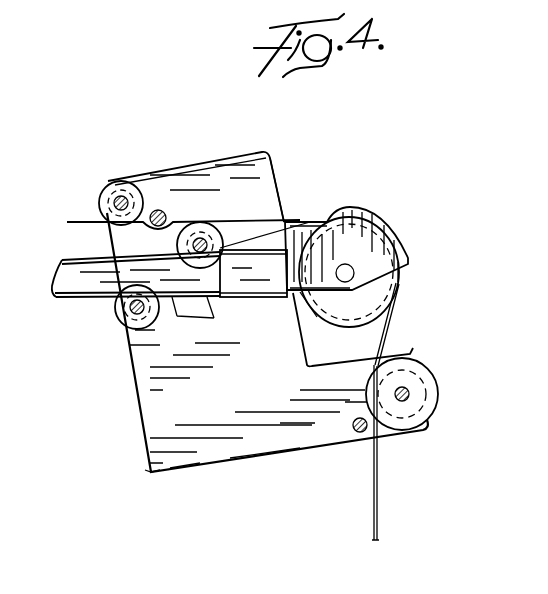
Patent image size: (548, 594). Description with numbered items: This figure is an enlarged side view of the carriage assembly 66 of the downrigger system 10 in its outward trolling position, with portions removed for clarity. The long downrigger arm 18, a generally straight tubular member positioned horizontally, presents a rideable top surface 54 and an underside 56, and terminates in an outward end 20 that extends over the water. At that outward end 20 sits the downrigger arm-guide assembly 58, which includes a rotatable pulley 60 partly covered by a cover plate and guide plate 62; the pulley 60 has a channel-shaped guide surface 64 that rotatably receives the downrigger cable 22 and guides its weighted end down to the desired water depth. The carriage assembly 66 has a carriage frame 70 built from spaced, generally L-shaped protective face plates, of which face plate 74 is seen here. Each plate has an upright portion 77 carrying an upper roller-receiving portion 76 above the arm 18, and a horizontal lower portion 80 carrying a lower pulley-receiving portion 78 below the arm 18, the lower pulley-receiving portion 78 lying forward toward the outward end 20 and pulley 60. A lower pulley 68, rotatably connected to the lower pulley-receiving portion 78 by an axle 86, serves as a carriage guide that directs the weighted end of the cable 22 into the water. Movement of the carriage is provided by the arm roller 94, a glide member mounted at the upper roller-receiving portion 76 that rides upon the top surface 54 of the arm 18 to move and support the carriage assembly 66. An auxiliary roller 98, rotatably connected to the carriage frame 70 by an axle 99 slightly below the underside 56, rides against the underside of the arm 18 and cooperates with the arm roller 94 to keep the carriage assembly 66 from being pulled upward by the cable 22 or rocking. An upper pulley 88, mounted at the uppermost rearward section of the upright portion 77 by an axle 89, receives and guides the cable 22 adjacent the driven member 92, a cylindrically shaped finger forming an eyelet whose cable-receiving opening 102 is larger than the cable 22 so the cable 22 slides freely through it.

The downrigger system 10 is at (213, 500).
The downrigger arm 18 is at (80, 285).
The outward end 20 is at (283, 313).
The downrigger cable 22 is at (379, 505).
The top surface 54 is at (84, 260).
The underside 56 is at (170, 318).
The downrigger arm-guide assembly 58 is at (361, 264).
The pulley 60 is at (402, 288).
The cover plate and guide plate 62 is at (372, 221).
The channel-shaped guide surface 64 is at (317, 302).
The carriage assembly 66 is at (236, 152).
The lower pulley 68 is at (438, 384).
The carriage frame 70 is at (147, 480).
The face plate 74 is at (140, 422).
The upper roller-receiving portion 76 is at (153, 252).
The upright portion 77 is at (285, 205).
The lower pulley-receiving portion 78 is at (393, 353).
The horizontal lower portion 80 is at (262, 455).
The axle 86 is at (408, 398).
The upper pulley 88 is at (118, 184).
The pin 89 is at (115, 203).
The driven member 92 is at (167, 212).
The arm roller 94 is at (224, 244).
The auxiliary roller 98 is at (120, 314).
The axle 99 is at (130, 320).
The cable-receiving opening 102 is at (160, 210).